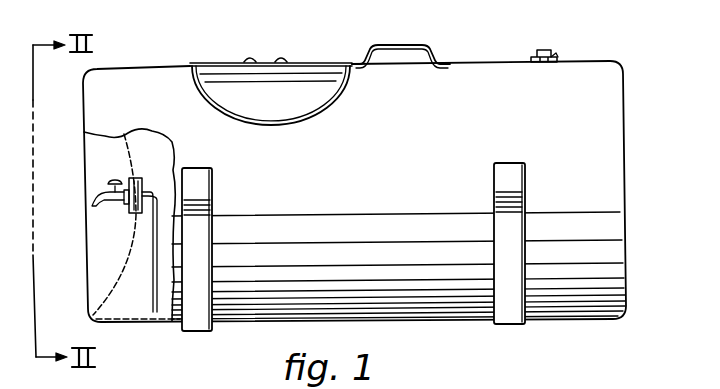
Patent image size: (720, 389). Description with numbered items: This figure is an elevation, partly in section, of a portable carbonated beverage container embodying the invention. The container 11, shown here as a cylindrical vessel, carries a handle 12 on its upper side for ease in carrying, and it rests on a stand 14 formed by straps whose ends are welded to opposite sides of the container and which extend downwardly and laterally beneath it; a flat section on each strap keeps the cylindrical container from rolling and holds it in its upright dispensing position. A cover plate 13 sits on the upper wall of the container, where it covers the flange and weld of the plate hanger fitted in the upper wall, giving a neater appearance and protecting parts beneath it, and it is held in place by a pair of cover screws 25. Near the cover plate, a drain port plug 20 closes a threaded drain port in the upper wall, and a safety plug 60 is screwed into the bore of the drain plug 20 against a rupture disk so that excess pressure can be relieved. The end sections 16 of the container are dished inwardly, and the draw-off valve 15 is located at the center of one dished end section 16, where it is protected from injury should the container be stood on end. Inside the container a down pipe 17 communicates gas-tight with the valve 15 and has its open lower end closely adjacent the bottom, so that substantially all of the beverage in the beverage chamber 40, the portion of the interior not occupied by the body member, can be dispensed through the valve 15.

The container 11 is at (625, 69).
The handle 12 is at (432, 50).
The cover plate 13 is at (328, 62).
The stand 14 is at (205, 245).
The draw-off valve 15 is at (105, 191).
The end section 16 is at (118, 263).
The down pipe 17 is at (148, 306).
The drain port plug 20 is at (557, 55).
The cover screws 25 is at (259, 60).
The beverage chamber 40 is at (148, 157).
The safety plug 60 is at (543, 49).